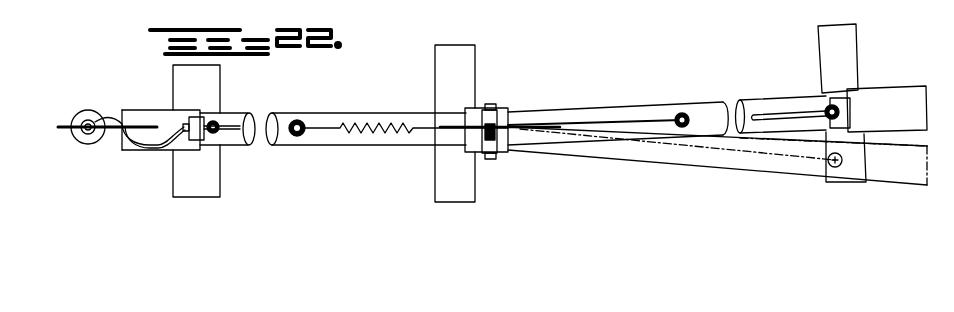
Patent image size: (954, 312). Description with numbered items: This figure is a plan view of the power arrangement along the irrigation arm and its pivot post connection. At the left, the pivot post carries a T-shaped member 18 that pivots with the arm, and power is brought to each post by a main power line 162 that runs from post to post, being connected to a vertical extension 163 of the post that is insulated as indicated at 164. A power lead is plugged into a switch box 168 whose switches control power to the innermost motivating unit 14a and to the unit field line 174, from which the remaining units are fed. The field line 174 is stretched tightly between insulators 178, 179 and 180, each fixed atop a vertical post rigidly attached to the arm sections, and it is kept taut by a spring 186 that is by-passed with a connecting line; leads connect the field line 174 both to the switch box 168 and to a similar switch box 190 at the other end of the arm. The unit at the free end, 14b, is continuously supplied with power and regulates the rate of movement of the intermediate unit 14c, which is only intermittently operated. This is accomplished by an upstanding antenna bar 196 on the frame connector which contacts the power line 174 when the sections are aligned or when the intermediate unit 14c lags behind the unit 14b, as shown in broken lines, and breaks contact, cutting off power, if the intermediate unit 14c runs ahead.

The innermost motivating unit 14a is at (208, 198).
The motivating unit at the free end of the arm 14b is at (837, 187).
The intermediate motivating unit 14c is at (477, 193).
The T-shaped member 18 is at (123, 110).
The main power line 162 is at (65, 122).
The vertical extension 163 is at (82, 144).
The insulation 164 is at (118, 120).
The switch box 168 is at (190, 150).
The unit field line 174 is at (552, 122).
The insulator 178 is at (298, 121).
The insulator 179 is at (684, 114).
The insulator 180 is at (828, 107).
The spring 186 is at (373, 122).
The switch box 190 is at (853, 110).
The antenna bar 196 is at (498, 118).